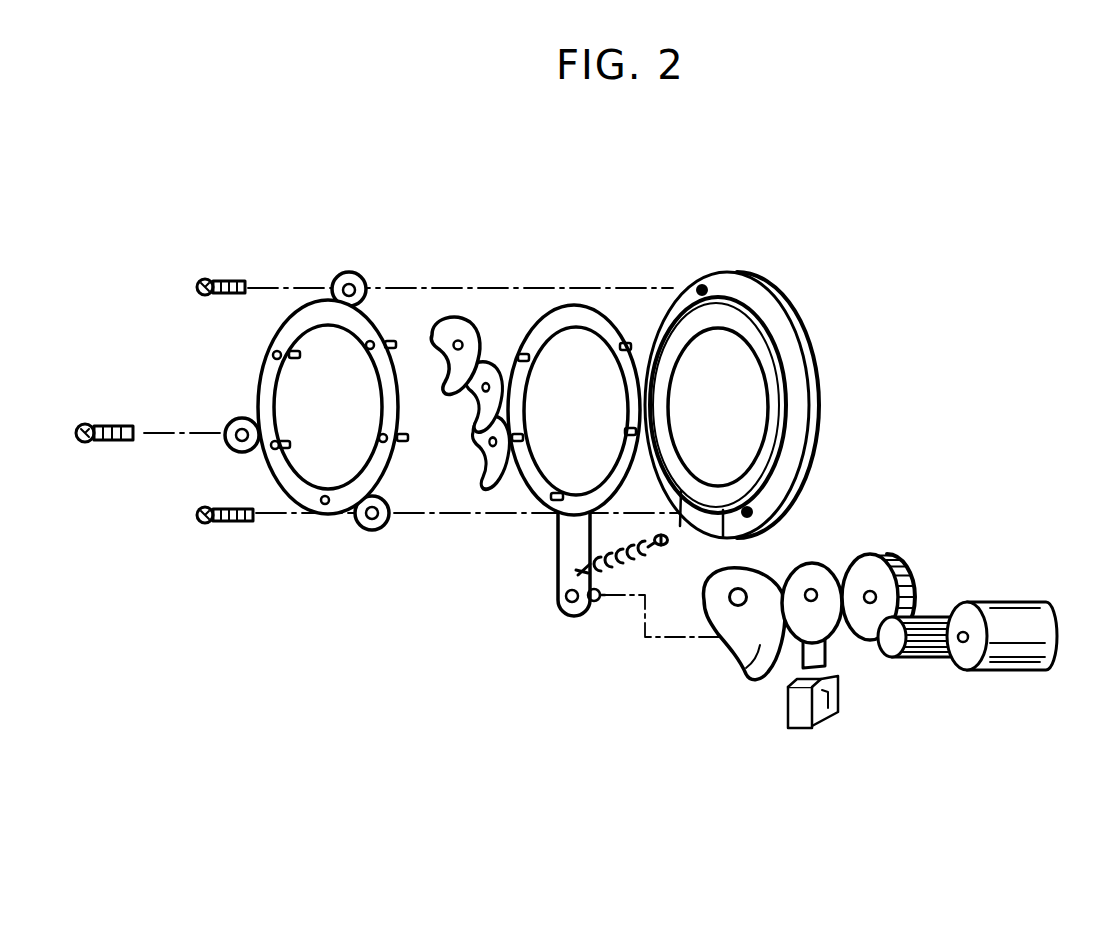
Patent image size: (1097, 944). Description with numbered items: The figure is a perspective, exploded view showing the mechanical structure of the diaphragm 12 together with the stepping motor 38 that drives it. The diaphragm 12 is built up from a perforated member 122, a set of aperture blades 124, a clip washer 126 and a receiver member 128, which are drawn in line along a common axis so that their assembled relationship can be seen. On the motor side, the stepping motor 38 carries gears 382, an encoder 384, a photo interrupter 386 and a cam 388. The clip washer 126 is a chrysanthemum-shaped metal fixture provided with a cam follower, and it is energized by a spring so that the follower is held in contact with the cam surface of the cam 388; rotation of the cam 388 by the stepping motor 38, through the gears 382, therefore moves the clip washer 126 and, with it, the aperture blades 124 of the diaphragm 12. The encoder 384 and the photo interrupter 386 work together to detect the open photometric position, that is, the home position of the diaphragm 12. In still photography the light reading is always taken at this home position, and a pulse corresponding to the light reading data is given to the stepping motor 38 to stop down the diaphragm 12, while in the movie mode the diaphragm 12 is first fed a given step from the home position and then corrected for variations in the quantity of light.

The diaphragm 12 is at (503, 219).
The perforated member 122 is at (315, 315).
The aperture blades 124 is at (448, 332).
The clip washer 126 is at (573, 315).
The receiver member 128 is at (725, 293).
The stepping motor 38 is at (1017, 617).
The gears 382 is at (937, 618).
The encoder 384 is at (812, 578).
The photo interrupter 386 is at (815, 728).
The cam 388 is at (742, 672).